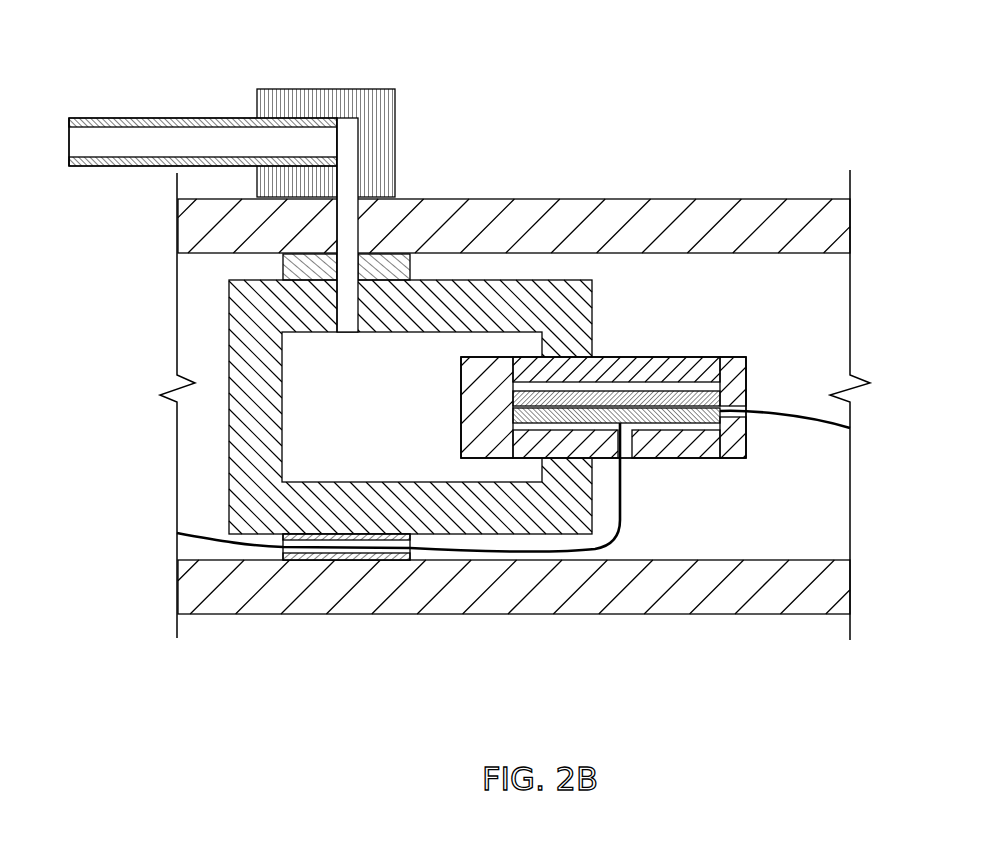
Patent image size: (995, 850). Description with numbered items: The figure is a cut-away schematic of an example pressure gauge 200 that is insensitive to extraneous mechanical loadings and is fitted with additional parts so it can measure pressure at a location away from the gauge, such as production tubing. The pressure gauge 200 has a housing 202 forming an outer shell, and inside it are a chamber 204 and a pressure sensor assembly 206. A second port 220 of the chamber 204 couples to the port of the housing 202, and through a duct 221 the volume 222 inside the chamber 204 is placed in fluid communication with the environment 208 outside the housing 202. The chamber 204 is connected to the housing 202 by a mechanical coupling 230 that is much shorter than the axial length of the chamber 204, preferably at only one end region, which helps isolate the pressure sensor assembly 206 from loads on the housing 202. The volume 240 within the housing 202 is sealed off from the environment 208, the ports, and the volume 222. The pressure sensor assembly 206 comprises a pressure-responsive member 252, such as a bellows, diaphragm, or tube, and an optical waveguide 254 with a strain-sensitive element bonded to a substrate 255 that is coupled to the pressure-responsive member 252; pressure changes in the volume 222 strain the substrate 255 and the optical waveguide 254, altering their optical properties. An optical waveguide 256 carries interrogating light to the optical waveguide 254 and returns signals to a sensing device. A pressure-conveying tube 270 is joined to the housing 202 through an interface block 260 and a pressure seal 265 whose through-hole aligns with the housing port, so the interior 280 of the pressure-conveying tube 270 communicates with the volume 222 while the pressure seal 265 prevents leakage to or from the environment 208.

The pressure gauge 200 is at (228, 109).
The housing 202 is at (452, 199).
The chamber 204 is at (570, 280).
The pressure sensor assembly 206 is at (609, 401).
The environment 208 is at (405, 110).
The second port 220 is at (357, 345).
The duct 221 is at (335, 317).
The volume 222 is at (320, 432).
The mechanical coupling 230 is at (283, 267).
The volume 240 is at (797, 342).
The pressure-responsive member 252 is at (499, 357).
The optical waveguide 254 is at (681, 425).
The substrate 255 is at (651, 390).
The optical waveguide 256 is at (446, 549).
The interface block 260 is at (300, 88).
The pressure seal 265 is at (358, 193).
The pressure-conveying tube 270 is at (107, 118).
The interior 280 is at (100, 152).